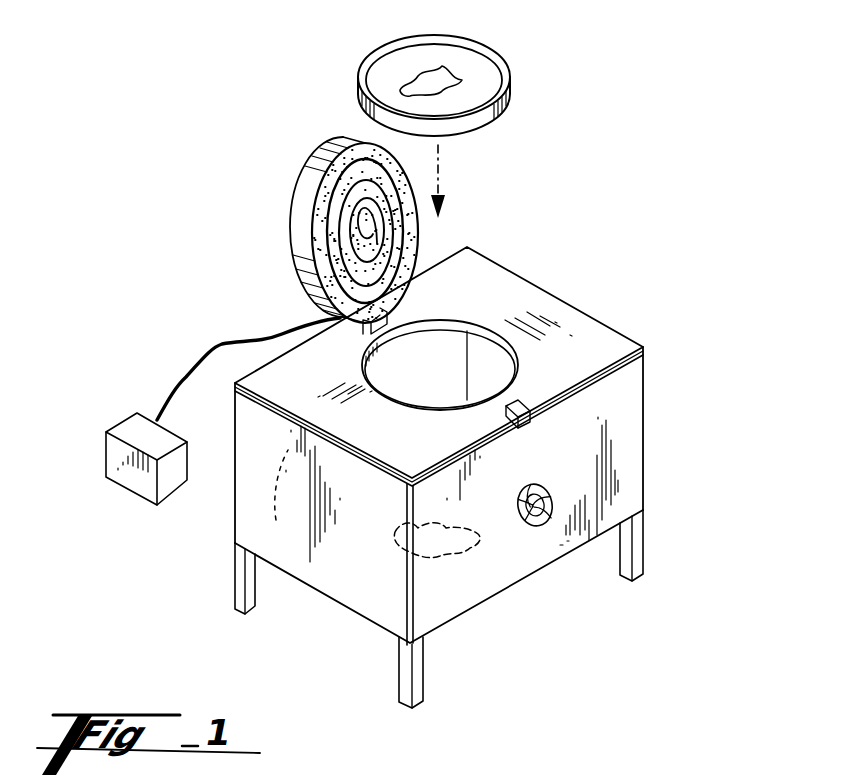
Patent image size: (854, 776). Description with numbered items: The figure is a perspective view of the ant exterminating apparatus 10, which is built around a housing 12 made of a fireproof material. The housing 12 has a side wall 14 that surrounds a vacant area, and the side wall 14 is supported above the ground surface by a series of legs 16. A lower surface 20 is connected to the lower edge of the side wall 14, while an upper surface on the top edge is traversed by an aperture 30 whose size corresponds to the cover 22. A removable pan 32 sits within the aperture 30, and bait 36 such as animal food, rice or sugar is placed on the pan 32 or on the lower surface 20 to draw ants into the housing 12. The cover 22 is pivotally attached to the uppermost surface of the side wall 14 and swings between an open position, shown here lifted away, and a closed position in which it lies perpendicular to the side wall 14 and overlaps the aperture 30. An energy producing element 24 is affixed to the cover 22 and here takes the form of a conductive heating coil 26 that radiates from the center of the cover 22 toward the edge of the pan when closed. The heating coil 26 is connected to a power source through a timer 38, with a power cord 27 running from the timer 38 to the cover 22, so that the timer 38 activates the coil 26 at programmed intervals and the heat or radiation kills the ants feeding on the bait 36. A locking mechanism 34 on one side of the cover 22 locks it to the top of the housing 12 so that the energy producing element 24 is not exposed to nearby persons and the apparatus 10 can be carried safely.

The ant exterminating apparatus 10 is at (275, 91).
The housing 12 is at (226, 485).
The side wall 14 is at (628, 465).
The legs 16 is at (232, 580).
The lower surface 20 is at (463, 572).
The cover 22 is at (315, 180).
The energy producing element 24 is at (436, 237).
The conductive heating coil 26 is at (348, 237).
The power cord 27 is at (220, 343).
The aperture 30 is at (478, 331).
The pan 32 is at (478, 43).
The locking mechanism 34 is at (530, 418).
The bait 36 is at (417, 82).
The timer 38 is at (122, 420).